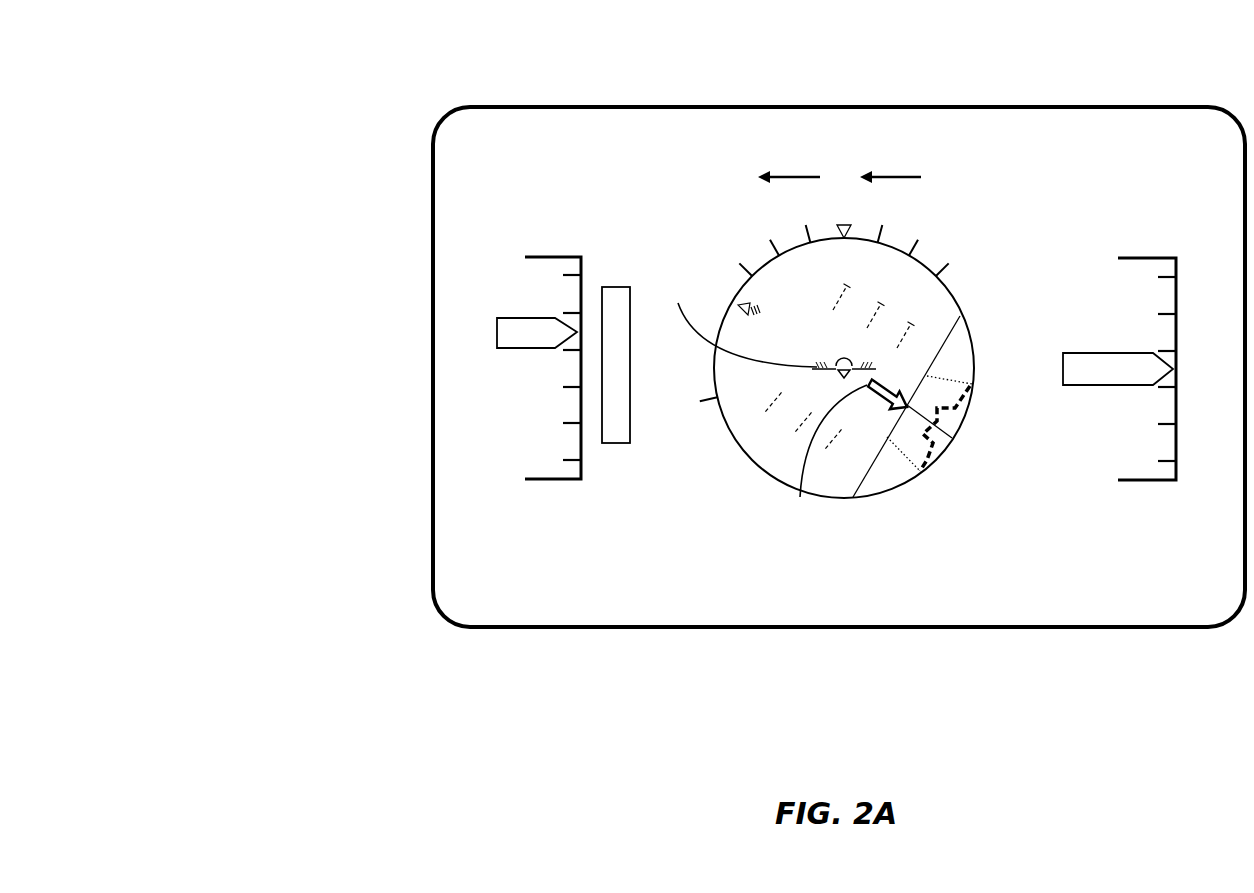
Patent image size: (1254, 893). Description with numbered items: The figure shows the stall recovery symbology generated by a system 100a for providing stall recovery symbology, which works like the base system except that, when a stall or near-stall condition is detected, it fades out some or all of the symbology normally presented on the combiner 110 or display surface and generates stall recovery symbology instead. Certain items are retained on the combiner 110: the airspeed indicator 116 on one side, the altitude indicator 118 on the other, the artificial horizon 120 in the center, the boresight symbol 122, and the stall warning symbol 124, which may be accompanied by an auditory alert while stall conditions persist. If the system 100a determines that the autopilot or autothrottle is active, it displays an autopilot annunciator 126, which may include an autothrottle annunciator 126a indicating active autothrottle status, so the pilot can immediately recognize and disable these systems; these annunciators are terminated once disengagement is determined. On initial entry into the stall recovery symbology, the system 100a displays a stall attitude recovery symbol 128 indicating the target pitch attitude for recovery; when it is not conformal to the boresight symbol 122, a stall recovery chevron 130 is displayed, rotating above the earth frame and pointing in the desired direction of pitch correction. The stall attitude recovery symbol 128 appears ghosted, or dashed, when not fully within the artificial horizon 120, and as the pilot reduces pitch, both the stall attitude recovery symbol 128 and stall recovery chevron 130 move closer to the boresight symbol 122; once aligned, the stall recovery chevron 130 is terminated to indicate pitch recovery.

The system for providing stall recovery symbology 100a is at (314, 85).
The combiner 110 is at (622, 105).
The airspeed indicator 116 is at (560, 255).
The altitude indicator 118 is at (1142, 257).
The artificial horizon 120 is at (777, 480).
The boresight symbol 122 is at (738, 318).
The stall warning symbol 124 is at (615, 443).
The autopilot annunciator 126 is at (792, 128).
The autothrottle annunciator 126a is at (900, 130).
The stall attitude recovery symbol 128 is at (937, 458).
The stall recovery chevron 130 is at (913, 338).